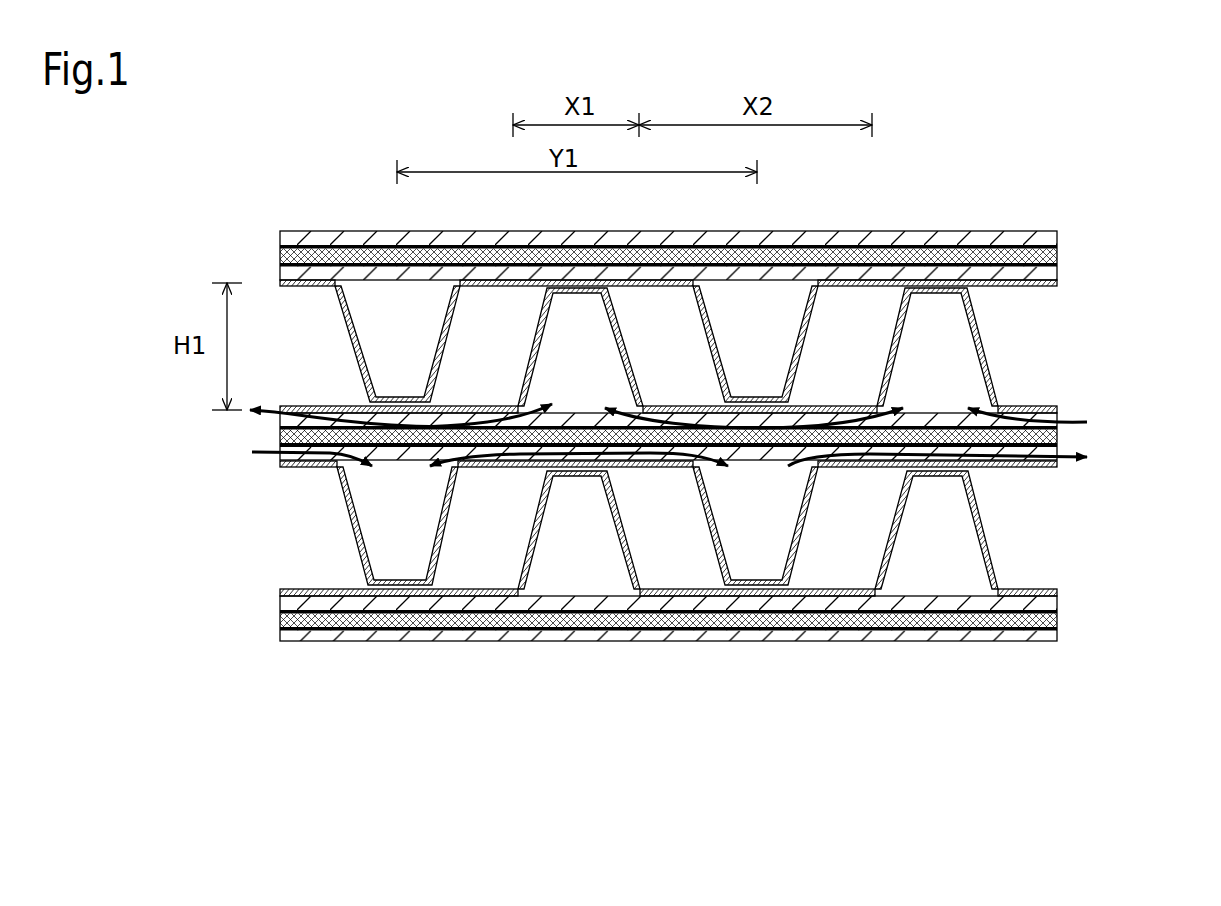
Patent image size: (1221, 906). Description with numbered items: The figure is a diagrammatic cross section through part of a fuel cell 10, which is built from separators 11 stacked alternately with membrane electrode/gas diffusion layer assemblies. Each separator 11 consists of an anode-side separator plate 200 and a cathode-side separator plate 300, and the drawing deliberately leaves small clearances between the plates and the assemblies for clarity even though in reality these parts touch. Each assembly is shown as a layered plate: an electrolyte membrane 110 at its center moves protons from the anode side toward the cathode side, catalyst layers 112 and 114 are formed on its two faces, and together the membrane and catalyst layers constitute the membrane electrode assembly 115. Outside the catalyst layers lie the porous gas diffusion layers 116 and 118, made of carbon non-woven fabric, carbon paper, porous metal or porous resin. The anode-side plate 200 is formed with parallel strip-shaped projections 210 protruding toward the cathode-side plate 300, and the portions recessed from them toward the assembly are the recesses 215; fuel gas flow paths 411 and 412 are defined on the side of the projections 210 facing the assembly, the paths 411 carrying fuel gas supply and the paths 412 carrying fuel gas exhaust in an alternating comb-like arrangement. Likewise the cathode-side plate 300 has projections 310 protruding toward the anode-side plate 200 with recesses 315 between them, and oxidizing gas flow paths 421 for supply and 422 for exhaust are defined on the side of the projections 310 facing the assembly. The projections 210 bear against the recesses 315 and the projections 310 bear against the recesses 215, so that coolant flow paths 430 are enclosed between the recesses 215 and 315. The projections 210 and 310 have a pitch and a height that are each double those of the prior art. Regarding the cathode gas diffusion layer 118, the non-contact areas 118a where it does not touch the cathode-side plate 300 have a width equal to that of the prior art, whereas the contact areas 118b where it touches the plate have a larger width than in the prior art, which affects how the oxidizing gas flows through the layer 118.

The fuel cell 10 is at (1085, 143).
The separator 11 is at (1128, 283).
The electrolyte membrane 110 is at (1060, 438).
The catalyst layer 112 is at (729, 598).
The catalyst layer 114 is at (918, 417).
The membrane electrode assembly 115 is at (241, 430).
The gas diffusion layer 116 is at (1060, 447).
The gas diffusion layer 118 is at (1060, 417).
The non-contact area 118a is at (556, 417).
The contact area 118b is at (722, 417).
The anode-side separator plate 200 is at (1048, 284).
The projection 210 is at (397, 587).
The recess 215 is at (623, 468).
The cathode-side separator plate 300 is at (1042, 406).
The projection 310 is at (567, 478).
The recess 315 is at (485, 596).
The fuel gas flow path 411 is at (784, 372).
The fuel gas flow path 412 is at (397, 503).
The oxidizing gas flow path 421 is at (580, 493).
The oxidizing gas flow path 422 is at (968, 389).
The coolant flow path 430 is at (510, 374).